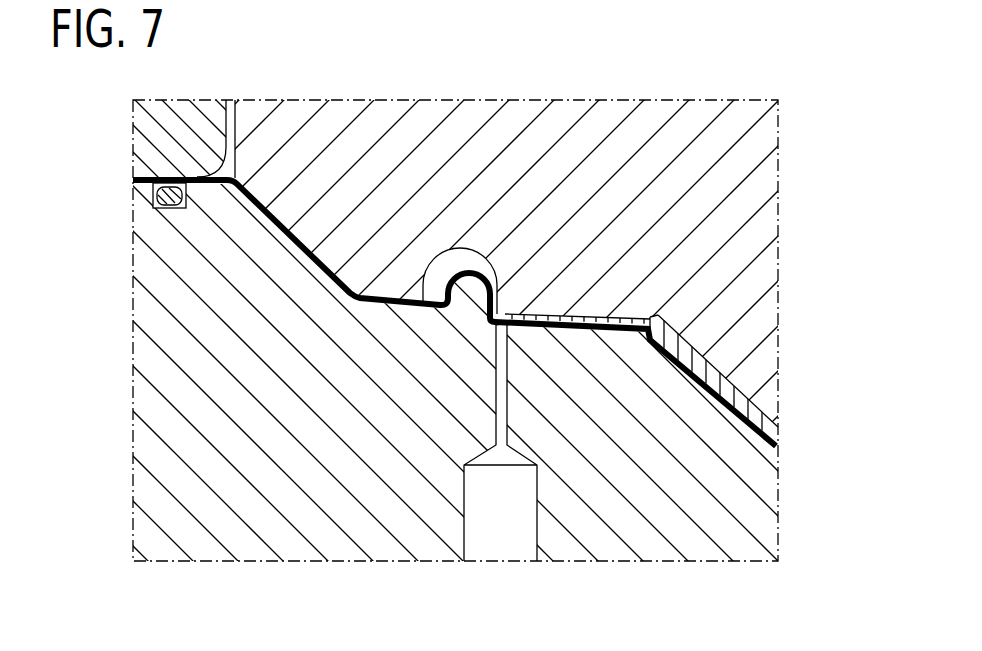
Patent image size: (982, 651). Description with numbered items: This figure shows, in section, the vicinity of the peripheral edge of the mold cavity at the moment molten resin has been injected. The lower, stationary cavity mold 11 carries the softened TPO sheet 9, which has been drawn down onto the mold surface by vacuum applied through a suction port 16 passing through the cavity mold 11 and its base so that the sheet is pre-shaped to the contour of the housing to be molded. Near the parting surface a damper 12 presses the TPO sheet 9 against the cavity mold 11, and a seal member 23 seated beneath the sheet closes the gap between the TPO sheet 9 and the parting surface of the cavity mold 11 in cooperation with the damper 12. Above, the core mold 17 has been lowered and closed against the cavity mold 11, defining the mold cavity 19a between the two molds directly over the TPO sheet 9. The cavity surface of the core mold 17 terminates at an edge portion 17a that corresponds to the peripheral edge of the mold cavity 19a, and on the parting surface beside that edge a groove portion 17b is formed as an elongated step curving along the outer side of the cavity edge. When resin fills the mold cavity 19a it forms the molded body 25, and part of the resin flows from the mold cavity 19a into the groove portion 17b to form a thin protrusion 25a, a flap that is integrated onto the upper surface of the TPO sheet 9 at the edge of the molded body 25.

The TPO sheet 9 is at (282, 240).
The cavity mold 11 is at (278, 505).
The damper 12 is at (178, 133).
The suction port 16 is at (502, 530).
The core mold 17 is at (742, 179).
The edge portion 17a is at (648, 315).
The groove portion 17b is at (573, 308).
The mold cavity 19a is at (703, 343).
The seal member 23 is at (163, 210).
The molded body 25 is at (752, 392).
The thin protrusion 25a is at (607, 313).